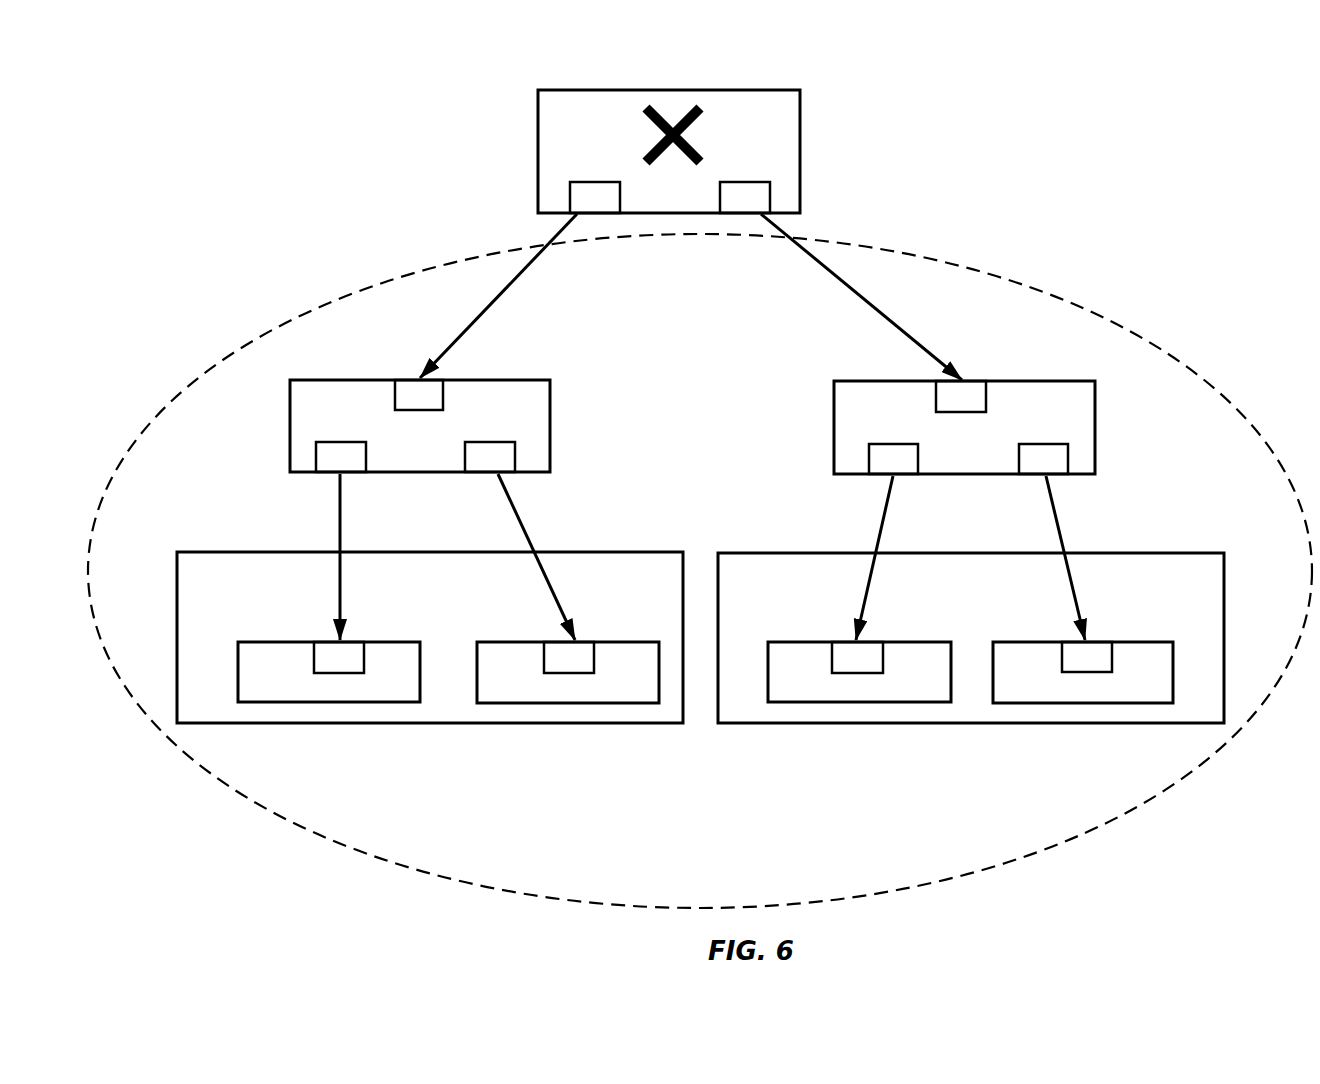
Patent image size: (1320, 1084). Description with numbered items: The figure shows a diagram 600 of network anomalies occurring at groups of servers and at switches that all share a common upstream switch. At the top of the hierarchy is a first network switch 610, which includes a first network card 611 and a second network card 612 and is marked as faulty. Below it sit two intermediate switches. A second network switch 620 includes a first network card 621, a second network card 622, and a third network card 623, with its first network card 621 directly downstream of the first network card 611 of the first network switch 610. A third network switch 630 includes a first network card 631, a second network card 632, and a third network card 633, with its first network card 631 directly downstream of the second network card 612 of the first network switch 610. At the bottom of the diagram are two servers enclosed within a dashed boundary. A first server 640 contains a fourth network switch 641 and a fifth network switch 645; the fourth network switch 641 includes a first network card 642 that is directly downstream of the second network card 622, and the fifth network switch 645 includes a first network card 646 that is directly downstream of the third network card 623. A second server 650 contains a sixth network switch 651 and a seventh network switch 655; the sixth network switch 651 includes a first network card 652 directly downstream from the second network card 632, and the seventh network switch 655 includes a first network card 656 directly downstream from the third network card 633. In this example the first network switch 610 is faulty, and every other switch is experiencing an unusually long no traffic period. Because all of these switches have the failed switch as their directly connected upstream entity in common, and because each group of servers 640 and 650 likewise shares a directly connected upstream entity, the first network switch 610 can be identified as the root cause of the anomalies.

The diagram 600 is at (192, 92).
The first network switch 610 is at (648, 90).
The first network card 611 is at (582, 207).
The second network card 612 is at (732, 207).
The second network switch 620 is at (375, 380).
The first network card 621 is at (406, 405).
The second network card 622 is at (328, 467).
The third network card 623 is at (477, 467).
The third network switch 630 is at (1030, 381).
The first network card 631 is at (948, 406).
The second network card 632 is at (880, 469).
The third network card 633 is at (1030, 469).
The first server 640 is at (270, 552).
The fourth network switch 641 is at (285, 642).
The first network card 642 is at (326, 667).
The fifth network switch 645 is at (518, 642).
The first network card 646 is at (556, 667).
The second server 650 is at (1175, 553).
The sixth network switch 651 is at (812, 642).
The first network card 652 is at (844, 667).
The seventh network switch 655 is at (1045, 642).
The first network card 656 is at (1074, 667).